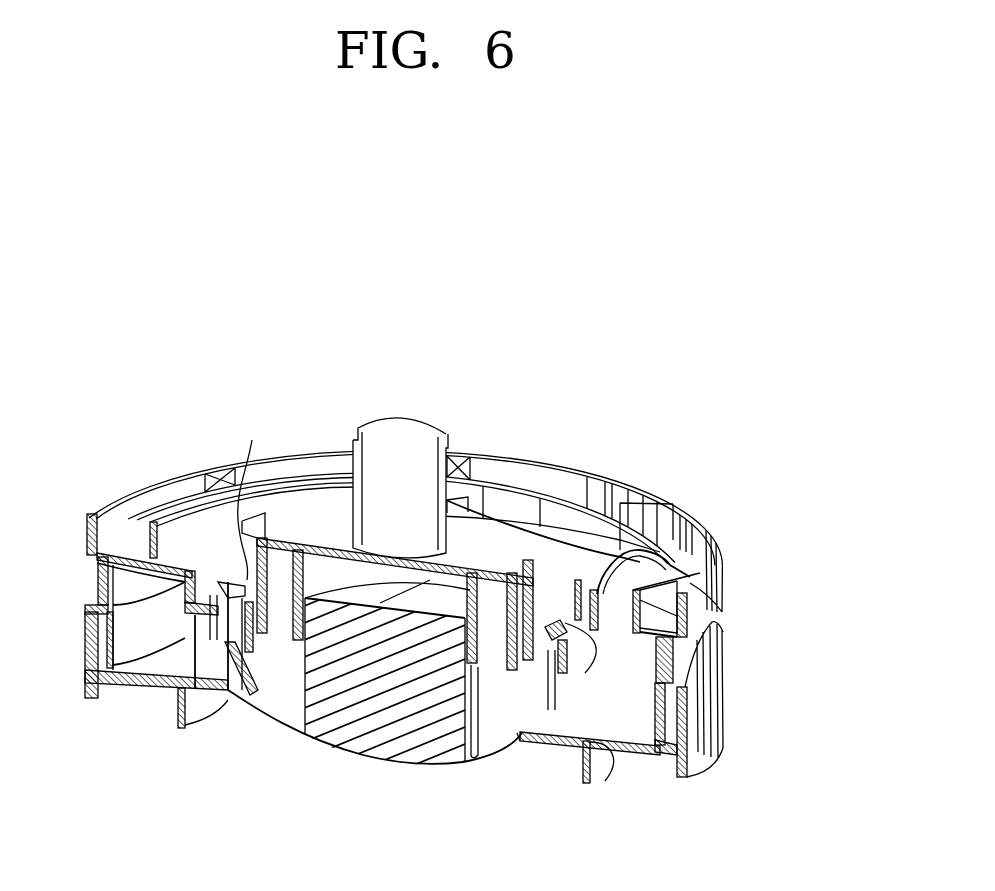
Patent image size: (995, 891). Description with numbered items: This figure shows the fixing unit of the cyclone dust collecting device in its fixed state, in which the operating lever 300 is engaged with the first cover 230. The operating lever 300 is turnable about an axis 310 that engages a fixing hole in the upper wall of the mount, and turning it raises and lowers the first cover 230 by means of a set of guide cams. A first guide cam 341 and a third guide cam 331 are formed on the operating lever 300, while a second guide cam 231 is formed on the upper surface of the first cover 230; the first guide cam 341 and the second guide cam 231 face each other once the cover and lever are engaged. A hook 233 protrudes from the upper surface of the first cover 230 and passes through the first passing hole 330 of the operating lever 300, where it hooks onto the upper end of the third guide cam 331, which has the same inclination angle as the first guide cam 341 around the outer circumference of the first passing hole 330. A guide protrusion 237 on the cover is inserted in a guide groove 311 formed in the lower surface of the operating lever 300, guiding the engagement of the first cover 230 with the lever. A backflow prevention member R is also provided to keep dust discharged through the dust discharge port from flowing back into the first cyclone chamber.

The operating lever 300 is at (713, 514).
The axis 310 is at (400, 424).
The guide groove 311 is at (314, 566).
The first passing hole 330 is at (540, 615).
The third guide cam 331 is at (252, 440).
The first cover 230 is at (733, 642).
The second guide cam 231 is at (668, 706).
The hook 233 is at (207, 617).
The guide protrusion 237 is at (365, 713).
The first guide cam 341 is at (660, 657).
The backflow prevention member R is at (598, 763).